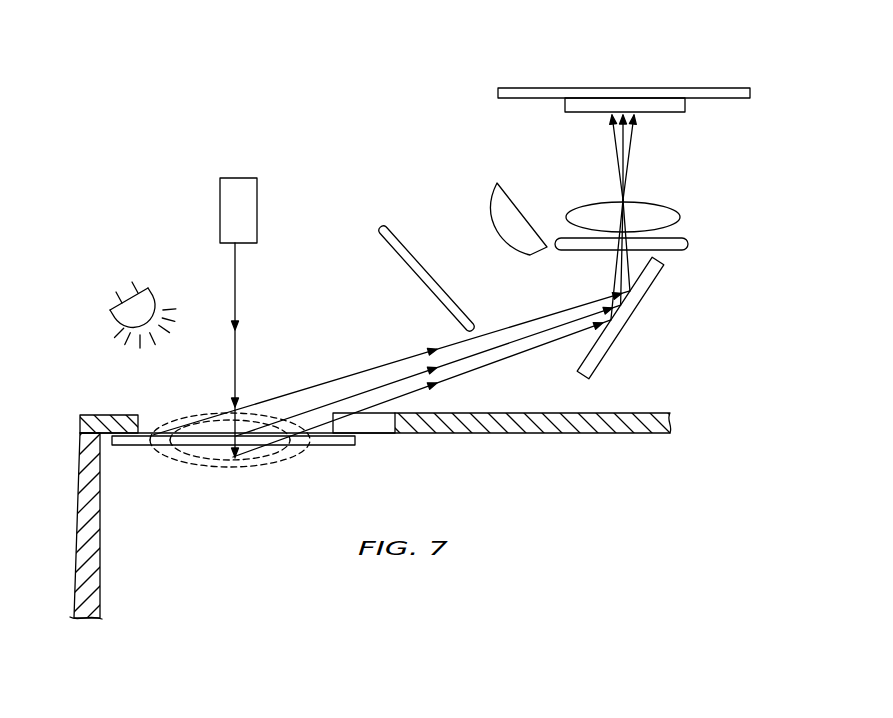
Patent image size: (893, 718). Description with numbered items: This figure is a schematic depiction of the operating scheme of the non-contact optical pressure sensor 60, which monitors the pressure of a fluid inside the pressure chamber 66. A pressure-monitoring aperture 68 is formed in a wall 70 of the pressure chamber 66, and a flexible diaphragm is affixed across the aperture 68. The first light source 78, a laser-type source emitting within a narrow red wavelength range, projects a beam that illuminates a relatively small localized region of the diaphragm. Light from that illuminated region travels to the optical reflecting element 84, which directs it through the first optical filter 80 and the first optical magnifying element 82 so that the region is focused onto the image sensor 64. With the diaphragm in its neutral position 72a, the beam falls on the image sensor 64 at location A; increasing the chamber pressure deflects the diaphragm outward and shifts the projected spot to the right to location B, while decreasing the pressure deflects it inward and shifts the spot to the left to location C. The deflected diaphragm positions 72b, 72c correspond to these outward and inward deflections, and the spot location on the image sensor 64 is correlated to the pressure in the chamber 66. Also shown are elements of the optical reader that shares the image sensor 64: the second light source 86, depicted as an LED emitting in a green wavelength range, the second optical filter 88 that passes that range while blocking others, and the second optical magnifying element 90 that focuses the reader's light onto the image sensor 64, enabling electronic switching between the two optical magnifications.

The optical pressure sensor 60 is at (660, 300).
The image sensor 64 is at (685, 105).
The pressure chamber 66 is at (78, 512).
The pressure-monitoring aperture 68 is at (140, 420).
The wall 70 is at (641, 412).
The neutral position 72a is at (333, 445).
The sample droplet upper region 72b is at (203, 415).
The sample droplet lower region 72c is at (233, 470).
The first light source 78 is at (238, 178).
The first optical filter 80 is at (688, 243).
The first optical magnifying element 82 is at (680, 216).
The optical reflecting element 84 is at (623, 327).
The second light source 86 is at (116, 316).
The second optical filter 88 is at (380, 227).
The second optical magnifying element 90 is at (494, 185).
The location A is at (622, 110).
The location B is at (613, 110).
The location C is at (629, 110).